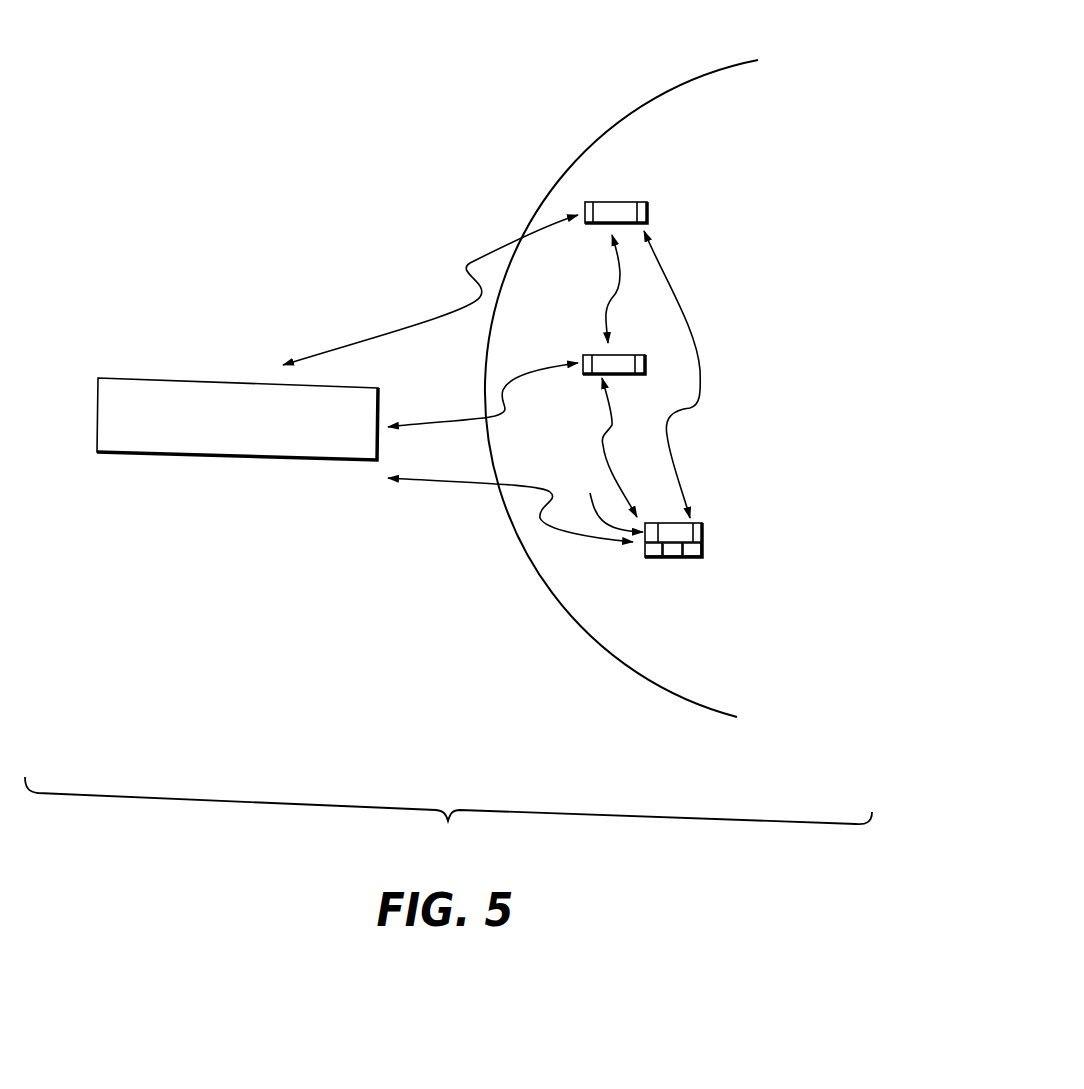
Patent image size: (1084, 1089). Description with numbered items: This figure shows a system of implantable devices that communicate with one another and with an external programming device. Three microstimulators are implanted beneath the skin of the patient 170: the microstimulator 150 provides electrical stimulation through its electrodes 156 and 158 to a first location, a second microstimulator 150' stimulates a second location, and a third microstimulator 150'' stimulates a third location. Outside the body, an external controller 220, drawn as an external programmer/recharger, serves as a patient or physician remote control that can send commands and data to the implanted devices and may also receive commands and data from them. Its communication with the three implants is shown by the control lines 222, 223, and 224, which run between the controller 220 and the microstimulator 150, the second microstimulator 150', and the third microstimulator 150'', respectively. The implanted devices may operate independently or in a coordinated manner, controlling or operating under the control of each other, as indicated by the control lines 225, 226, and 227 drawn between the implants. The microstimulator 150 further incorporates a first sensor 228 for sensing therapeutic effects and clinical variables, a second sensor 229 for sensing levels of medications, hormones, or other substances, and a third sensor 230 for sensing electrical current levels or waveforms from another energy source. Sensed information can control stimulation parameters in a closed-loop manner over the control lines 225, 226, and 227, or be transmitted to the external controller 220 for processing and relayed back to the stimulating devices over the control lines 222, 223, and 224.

The patient 170 is at (768, 134).
The external controller 220 is at (127, 378).
The control line 222 is at (472, 487).
The control line 223 is at (478, 412).
The control line 224 is at (382, 335).
The control line 225 is at (617, 430).
The control line 226 is at (623, 287).
The control line 227 is at (703, 360).
The first sensor 228 is at (650, 557).
The second sensor 229 is at (672, 557).
The third sensor 230 is at (693, 557).
The microstimulator 150 is at (667, 511).
The second microstimulator 150' is at (600, 324).
The third microstimulator 150'' is at (631, 173).
The electrode 156 is at (607, 494).
The electrode 158 is at (703, 533).